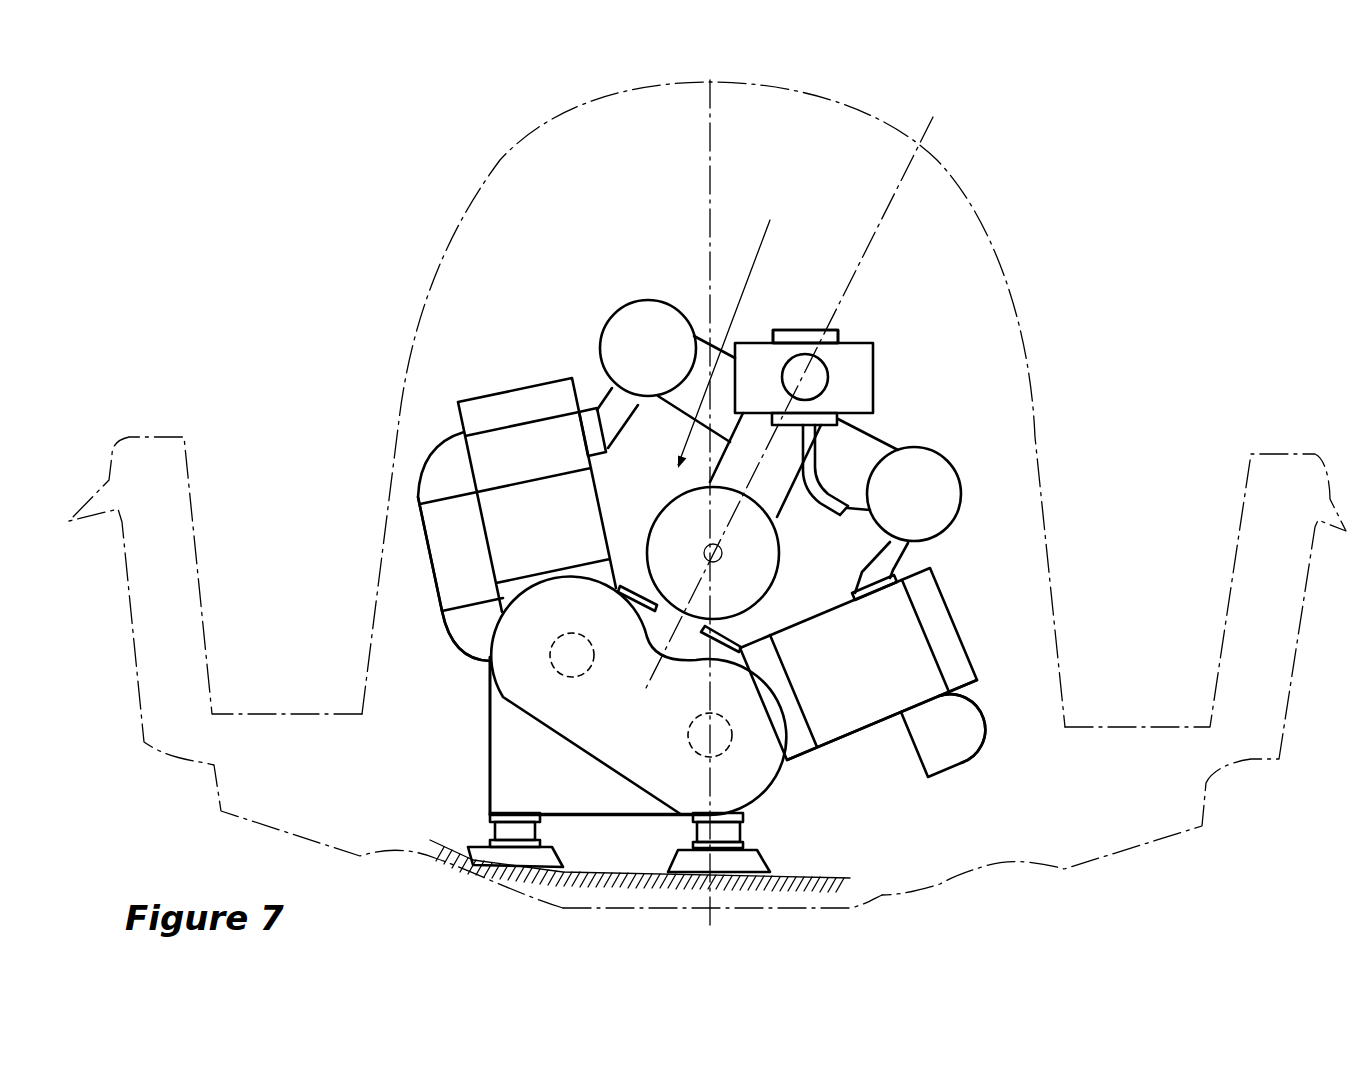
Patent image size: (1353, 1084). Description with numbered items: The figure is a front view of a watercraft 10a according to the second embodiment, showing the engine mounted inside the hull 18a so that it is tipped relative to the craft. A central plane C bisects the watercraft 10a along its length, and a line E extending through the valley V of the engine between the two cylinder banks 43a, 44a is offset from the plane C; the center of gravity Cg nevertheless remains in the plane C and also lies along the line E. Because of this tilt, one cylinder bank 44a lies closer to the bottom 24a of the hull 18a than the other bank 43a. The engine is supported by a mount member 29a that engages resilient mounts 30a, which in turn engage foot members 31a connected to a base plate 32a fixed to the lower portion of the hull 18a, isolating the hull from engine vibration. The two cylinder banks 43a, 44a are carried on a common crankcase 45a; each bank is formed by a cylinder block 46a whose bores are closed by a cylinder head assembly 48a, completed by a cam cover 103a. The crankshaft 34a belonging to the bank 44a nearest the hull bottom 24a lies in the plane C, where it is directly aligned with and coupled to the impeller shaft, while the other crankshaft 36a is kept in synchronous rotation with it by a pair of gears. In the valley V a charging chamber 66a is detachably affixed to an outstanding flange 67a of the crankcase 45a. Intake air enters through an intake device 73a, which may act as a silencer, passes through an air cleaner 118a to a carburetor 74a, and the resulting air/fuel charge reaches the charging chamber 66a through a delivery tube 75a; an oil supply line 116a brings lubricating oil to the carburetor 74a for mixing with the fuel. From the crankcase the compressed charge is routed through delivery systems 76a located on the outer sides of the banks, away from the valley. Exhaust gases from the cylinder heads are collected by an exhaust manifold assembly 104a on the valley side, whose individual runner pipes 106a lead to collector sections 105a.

The watercraft 10a is at (1020, 213).
The hull 18a is at (1047, 547).
The bottom 24a is at (882, 897).
The mount member 29a is at (505, 745).
The resilient mount 30a is at (488, 832).
The foot member 31a is at (662, 869).
The base plate 32a is at (820, 873).
The crankshaft 34a is at (696, 719).
The crankshaft 36a is at (578, 678).
The cylinder bank 43a is at (995, 627).
The cylinder bank 44a is at (485, 368).
The crankcase 45a is at (513, 692).
The cylinder block 46a is at (510, 528).
The cylinder head assembly 48a is at (483, 458).
The charging chamber 66a is at (763, 570).
The flange 67a is at (742, 630).
The intake device 73a is at (807, 354).
The carburetor 74a is at (840, 330).
The delivery tube 75a is at (790, 490).
The delivery system 76a is at (466, 662).
The cam cover 103a is at (483, 413).
The exhaust manifold assembly 104a is at (877, 452).
The collector section 105a is at (665, 301).
The runner pipe 106a is at (597, 392).
The oil supply line 116a is at (893, 420).
The air cleaner 118a is at (863, 367).
The central plane C is at (711, 82).
The line E is at (796, 389).
The valley V is at (728, 331).
The center of gravity Cg is at (696, 544).